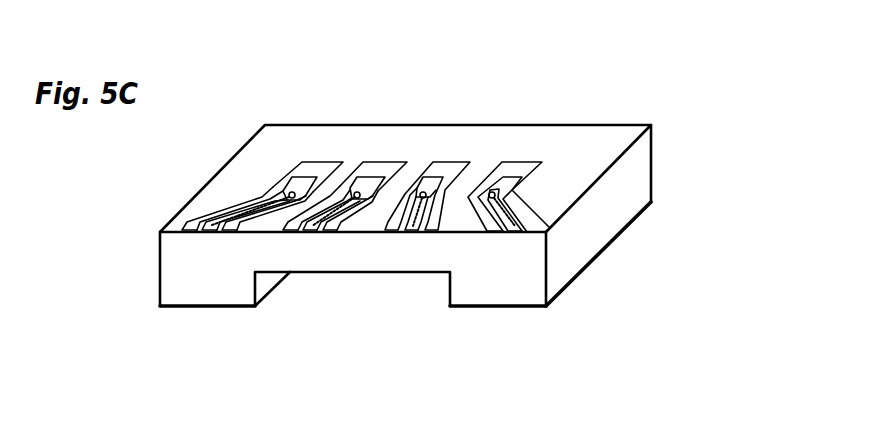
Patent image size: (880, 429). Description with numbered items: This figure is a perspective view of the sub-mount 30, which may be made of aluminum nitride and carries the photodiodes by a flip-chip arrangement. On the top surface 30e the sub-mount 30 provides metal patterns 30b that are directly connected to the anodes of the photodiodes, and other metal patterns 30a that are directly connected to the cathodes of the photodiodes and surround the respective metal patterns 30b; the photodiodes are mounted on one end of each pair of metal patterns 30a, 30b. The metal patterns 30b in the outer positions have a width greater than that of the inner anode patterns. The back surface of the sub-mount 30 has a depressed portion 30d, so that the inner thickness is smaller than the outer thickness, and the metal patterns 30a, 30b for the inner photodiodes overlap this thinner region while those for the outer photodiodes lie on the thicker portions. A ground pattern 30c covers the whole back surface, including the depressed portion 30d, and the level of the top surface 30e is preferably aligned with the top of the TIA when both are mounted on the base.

The sub-mount 30 is at (648, 109).
The metal pattern 30a is at (293, 191).
The metal pattern 30b is at (327, 168).
The ground pattern 30c is at (612, 245).
The depressed portion 30d is at (347, 282).
The top surface 30e is at (585, 140).